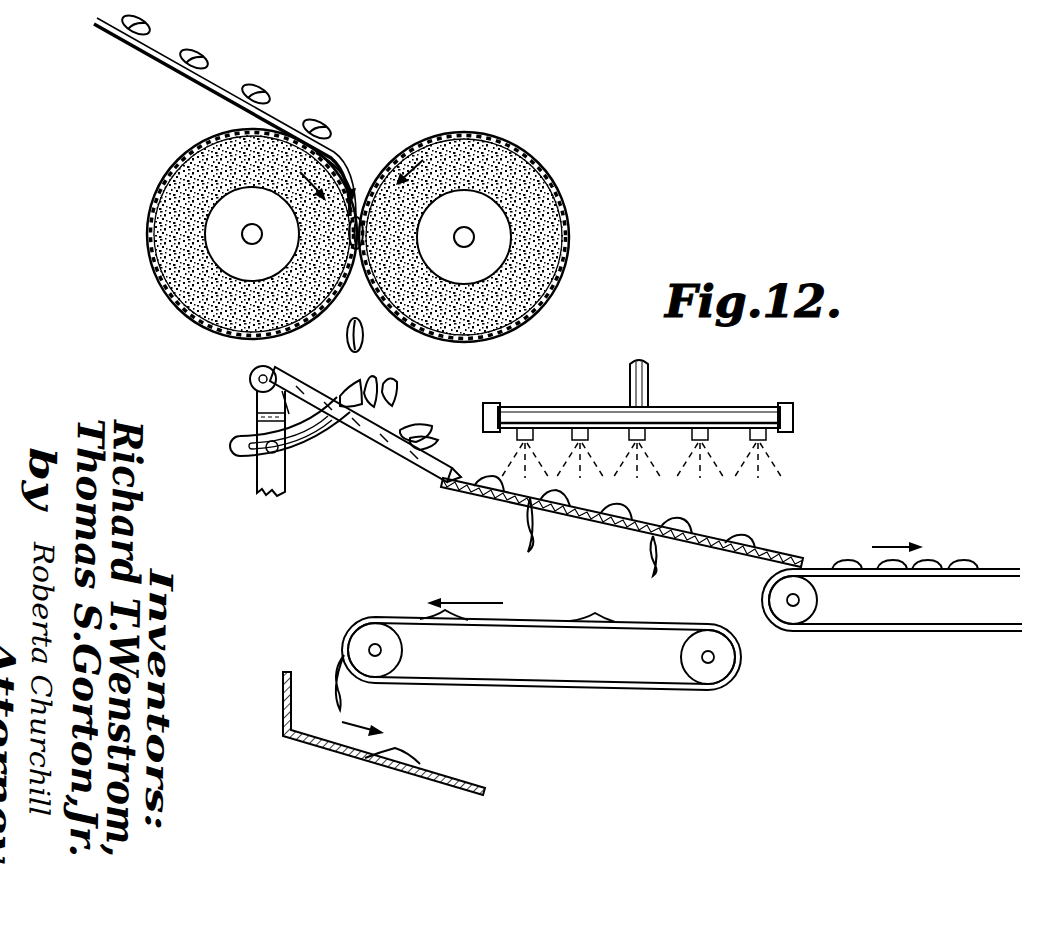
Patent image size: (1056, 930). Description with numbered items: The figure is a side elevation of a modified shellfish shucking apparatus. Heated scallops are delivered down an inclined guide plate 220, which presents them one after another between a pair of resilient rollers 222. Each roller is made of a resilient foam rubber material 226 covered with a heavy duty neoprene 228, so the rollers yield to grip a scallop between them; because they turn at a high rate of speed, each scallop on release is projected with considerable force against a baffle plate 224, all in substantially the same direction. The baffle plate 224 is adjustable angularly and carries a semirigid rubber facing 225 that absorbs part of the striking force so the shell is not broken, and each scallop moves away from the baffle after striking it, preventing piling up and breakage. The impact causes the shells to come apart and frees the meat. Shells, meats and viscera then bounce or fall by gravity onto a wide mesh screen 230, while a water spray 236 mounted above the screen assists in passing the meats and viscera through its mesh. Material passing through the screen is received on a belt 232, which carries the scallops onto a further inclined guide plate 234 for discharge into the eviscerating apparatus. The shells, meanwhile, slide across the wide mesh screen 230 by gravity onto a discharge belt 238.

The inclined guide plate 220 is at (207, 78).
The resilient rollers 222 is at (359, 235).
The baffle plate 224 is at (378, 448).
The semirigid rubber facing 225 is at (384, 428).
The resilient foam rubber material 226 is at (189, 272).
The heavy duty neoprene 228 is at (149, 229).
The wide mesh screen 230 is at (593, 521).
The belt 232 is at (523, 622).
The inclined guide plate 234 is at (338, 748).
The water spray 236 is at (775, 446).
The discharge belt 238 is at (988, 573).